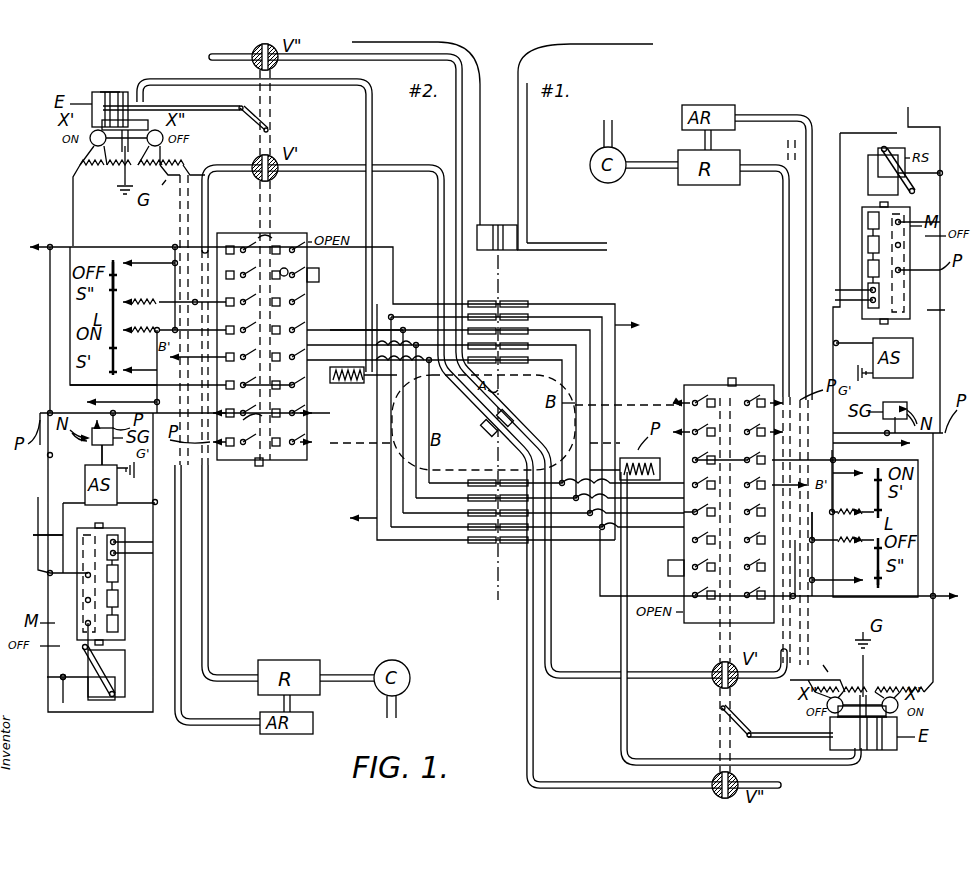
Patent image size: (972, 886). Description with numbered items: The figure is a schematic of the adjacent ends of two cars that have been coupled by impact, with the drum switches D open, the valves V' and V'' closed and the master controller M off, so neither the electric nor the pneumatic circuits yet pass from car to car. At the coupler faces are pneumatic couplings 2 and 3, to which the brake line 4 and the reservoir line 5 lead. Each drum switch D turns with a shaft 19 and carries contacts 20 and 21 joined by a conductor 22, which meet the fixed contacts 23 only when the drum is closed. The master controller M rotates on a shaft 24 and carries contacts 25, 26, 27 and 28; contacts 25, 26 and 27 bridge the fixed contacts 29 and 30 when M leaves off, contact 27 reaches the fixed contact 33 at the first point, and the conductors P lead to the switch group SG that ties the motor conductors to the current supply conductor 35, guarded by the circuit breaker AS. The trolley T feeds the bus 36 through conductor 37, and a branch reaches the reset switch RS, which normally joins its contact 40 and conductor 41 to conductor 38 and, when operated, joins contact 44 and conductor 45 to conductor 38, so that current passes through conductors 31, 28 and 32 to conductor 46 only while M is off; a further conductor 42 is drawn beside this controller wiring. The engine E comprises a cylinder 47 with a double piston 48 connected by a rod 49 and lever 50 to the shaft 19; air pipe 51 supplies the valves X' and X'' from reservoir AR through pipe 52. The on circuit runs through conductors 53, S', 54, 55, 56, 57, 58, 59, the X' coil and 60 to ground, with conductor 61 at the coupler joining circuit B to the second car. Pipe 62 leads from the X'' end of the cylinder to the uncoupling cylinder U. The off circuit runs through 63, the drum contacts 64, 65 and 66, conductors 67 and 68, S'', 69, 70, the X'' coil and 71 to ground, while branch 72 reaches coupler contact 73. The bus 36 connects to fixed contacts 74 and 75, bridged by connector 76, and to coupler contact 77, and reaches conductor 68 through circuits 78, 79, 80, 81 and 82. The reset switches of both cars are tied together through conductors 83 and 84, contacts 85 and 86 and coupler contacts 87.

The pneumatic coupling 2 is at (508, 413).
The pneumatic coupling 3 is at (478, 432).
The brake line 4 is at (397, 61).
The reservoir line 5 is at (432, 171).
The shaft 19 is at (258, 199).
The contact 20 is at (495, 420).
The contact 21 is at (245, 420).
The conductor 22 is at (262, 430).
The fixed contact 23 is at (686, 416).
The shaft 24 is at (100, 522).
The contact 25 is at (119, 625).
The contact 26 is at (119, 600).
The contact 27 is at (119, 575).
The contact 28 is at (119, 561).
The fixed contact 29 is at (85, 624).
The fixed contact 30 is at (85, 602).
The conductor 31 is at (118, 546).
The conductor 32 is at (116, 550).
The fixed contact 33 is at (85, 578).
The current supply conductor 35 is at (105, 445).
The bus 36 is at (52, 246).
The conductor 37 is at (38, 497).
The conductor 38 is at (72, 676).
The contact 40 is at (112, 696).
The conductor 41 is at (140, 676).
The wire 42 is at (33, 535).
The contact 44 is at (90, 684).
The conductor 45 is at (125, 712).
The conductor 46 is at (162, 500).
The cylinder 47 is at (98, 92).
The double piston 48 is at (115, 91).
The rod 49 is at (215, 106).
The lever 50 is at (248, 118).
The air pipe 51 is at (494, 419).
The pipe 52 is at (773, 113).
The conductor 53 is at (165, 358).
The conductor 54 is at (150, 375).
The conductor 55 is at (307, 385).
The conductor 56 is at (294, 390).
The conductor 57 is at (280, 390).
The conductor 58 is at (243, 390).
The conductor 59 is at (95, 387).
The conductor 60 is at (110, 172).
The conductor 61 is at (498, 421).
The pipe 62 is at (186, 79).
The conductor 63 is at (493, 414).
The contact 64 is at (240, 328).
The contact 65 is at (248, 328).
The contact 66 is at (308, 330).
The conductor 67 is at (292, 328).
The conductor 68 is at (498, 419).
The conductor 69 is at (160, 263).
The conductor 70 is at (183, 247).
The conductor 71 is at (495, 426).
The branch conductor 72 is at (172, 266).
The contact 73 is at (498, 421).
The fixed contact 74 is at (246, 246).
The fixed contact 75 is at (293, 248).
The movable contact connector 76 is at (263, 246).
The contact 77 is at (490, 303).
The drum contact 78 is at (165, 294).
The circuit 79 is at (243, 274).
The circuit 80 is at (285, 275).
The circuit 81 is at (300, 281).
The circuit 82 is at (308, 275).
The conductor 83 is at (157, 328).
The conductor 84 is at (236, 300).
The contact 85 is at (254, 300).
The contact 86 is at (292, 300).
The coupler contact 87 is at (498, 421).